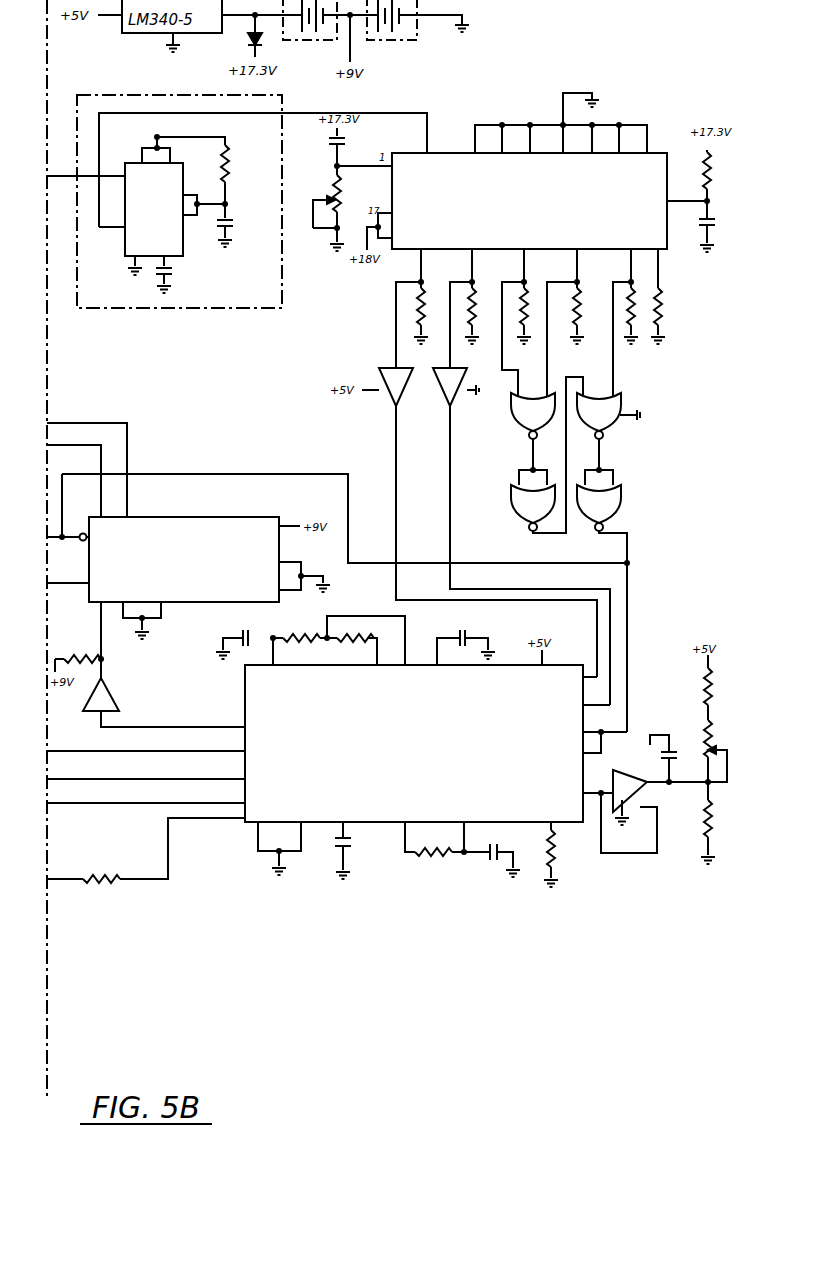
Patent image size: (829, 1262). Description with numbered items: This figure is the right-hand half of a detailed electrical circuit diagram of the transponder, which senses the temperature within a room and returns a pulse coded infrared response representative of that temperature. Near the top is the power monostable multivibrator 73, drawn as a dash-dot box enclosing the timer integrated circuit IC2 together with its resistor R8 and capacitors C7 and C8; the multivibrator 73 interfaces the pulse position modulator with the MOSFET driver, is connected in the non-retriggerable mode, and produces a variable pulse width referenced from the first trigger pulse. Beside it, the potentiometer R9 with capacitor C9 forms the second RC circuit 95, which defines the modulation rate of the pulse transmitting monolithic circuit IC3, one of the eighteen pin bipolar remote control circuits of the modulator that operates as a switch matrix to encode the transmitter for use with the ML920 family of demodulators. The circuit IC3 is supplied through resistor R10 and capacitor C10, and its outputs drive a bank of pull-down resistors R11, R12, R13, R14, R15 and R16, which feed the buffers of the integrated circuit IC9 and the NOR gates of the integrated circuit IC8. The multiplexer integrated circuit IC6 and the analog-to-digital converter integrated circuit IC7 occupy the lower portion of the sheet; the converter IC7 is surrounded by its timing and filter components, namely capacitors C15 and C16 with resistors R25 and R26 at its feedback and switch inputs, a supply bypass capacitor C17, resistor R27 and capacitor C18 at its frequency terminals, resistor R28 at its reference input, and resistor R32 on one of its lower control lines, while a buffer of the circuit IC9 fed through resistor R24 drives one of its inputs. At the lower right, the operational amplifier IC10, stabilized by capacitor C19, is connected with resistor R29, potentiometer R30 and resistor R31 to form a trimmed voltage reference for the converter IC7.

The power monostable multivibrator 73 is at (237, 201).
The second RC circuit 95 is at (330, 234).
The ICM 7555 integrated circuit IC2 is at (155, 210).
The ML 924 integrated circuit IC3 is at (538, 180).
The CD 4051 integrated circuit IC6 is at (203, 571).
The ADC 3511 CC integrated circuit IC7 is at (403, 770).
The CD 4001 integrated circuit IC8 is at (618, 487).
The 4050 integrated circuit IC9 is at (430, 416).
The LM 358 integrated circuit IC10 is at (637, 775).
The resistor R8 is at (236, 176).
The potentiometer R9 is at (338, 208).
The resistor R10 is at (695, 175).
The resistor R11 is at (431, 316).
The resistor R12 is at (482, 316).
The resistor R13 is at (534, 316).
The resistor R14 is at (587, 316).
The resistor R15 is at (641, 316).
The resistor R16 is at (667, 316).
The resistor R24 is at (78, 655).
The resistor R25 is at (301, 629).
The resistor R26 is at (355, 628).
The resistor R27 is at (433, 843).
The resistor R28 is at (563, 854).
The resistor R29 is at (689, 686).
The potentiometer R30 is at (712, 731).
The resistor R31 is at (693, 832).
The resistor R32 is at (101, 868).
The capacitor C7 is at (225, 225).
The capacitor C8 is at (174, 274).
The capacitor C9 is at (360, 148).
The capacitor C10 is at (699, 226).
The capacitor C15 is at (244, 630).
The capacitor C16 is at (466, 629).
The capacitor C17 is at (356, 850).
The capacitor C18 is at (501, 853).
The capacitor C19 is at (673, 758).